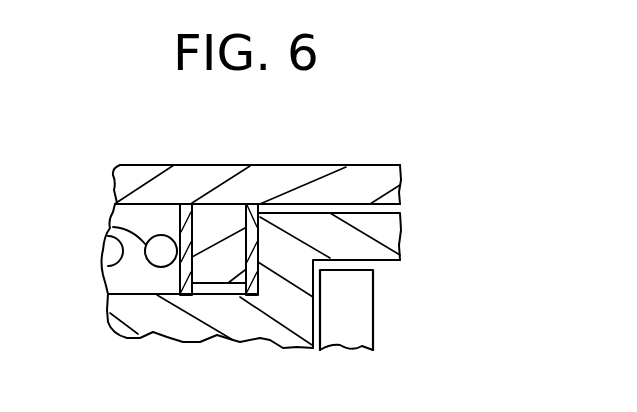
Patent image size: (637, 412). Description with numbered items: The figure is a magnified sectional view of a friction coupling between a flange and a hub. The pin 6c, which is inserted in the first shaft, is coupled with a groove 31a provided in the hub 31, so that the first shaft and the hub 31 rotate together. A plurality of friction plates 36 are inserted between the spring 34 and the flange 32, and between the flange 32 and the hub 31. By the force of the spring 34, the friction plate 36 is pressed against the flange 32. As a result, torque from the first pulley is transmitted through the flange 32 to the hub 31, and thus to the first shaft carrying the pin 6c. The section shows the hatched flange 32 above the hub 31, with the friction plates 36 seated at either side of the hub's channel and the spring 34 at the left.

The flange 32 is at (250, 166).
The friction plate 36 is at (180, 203).
The spring 34 is at (113, 227).
The hub 31 is at (282, 312).
The groove 31a is at (390, 274).
The pin 6c is at (358, 311).